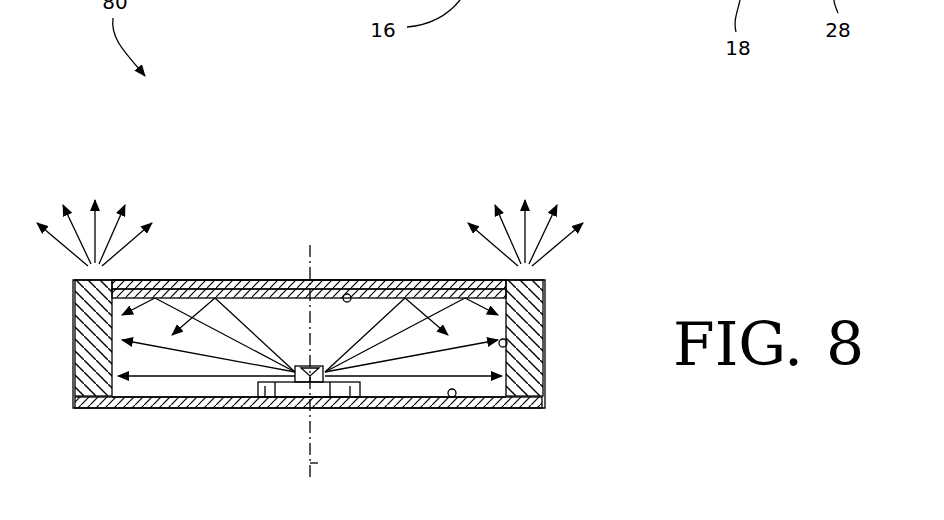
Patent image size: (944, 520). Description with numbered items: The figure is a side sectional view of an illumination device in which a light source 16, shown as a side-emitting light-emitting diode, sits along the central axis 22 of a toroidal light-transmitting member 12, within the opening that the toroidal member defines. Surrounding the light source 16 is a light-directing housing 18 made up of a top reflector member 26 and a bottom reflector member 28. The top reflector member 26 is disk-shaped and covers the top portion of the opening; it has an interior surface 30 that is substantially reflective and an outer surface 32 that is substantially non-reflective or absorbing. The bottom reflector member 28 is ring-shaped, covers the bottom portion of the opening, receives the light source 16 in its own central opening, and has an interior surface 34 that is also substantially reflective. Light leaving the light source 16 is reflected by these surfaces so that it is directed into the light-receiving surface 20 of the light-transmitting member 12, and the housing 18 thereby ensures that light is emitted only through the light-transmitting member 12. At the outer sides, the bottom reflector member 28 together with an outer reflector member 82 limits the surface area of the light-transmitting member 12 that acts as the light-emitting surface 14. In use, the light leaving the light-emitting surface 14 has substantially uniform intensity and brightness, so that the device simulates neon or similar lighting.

The light-transmitting member 12 is at (93, 407).
The light-emitting surface 14 is at (103, 272).
The light source 16 is at (292, 398).
The light-directing housing 18 is at (215, 297).
The light-receiving surface 20 is at (506, 345).
The central axis 22 is at (318, 463).
The top reflector member 26 is at (255, 280).
The bottom reflector member 28 is at (158, 405).
The interior surface 30 is at (348, 294).
The outer surface 32 is at (386, 279).
The interior surface 34 is at (458, 397).
The outer reflector member 82 is at (73, 372).